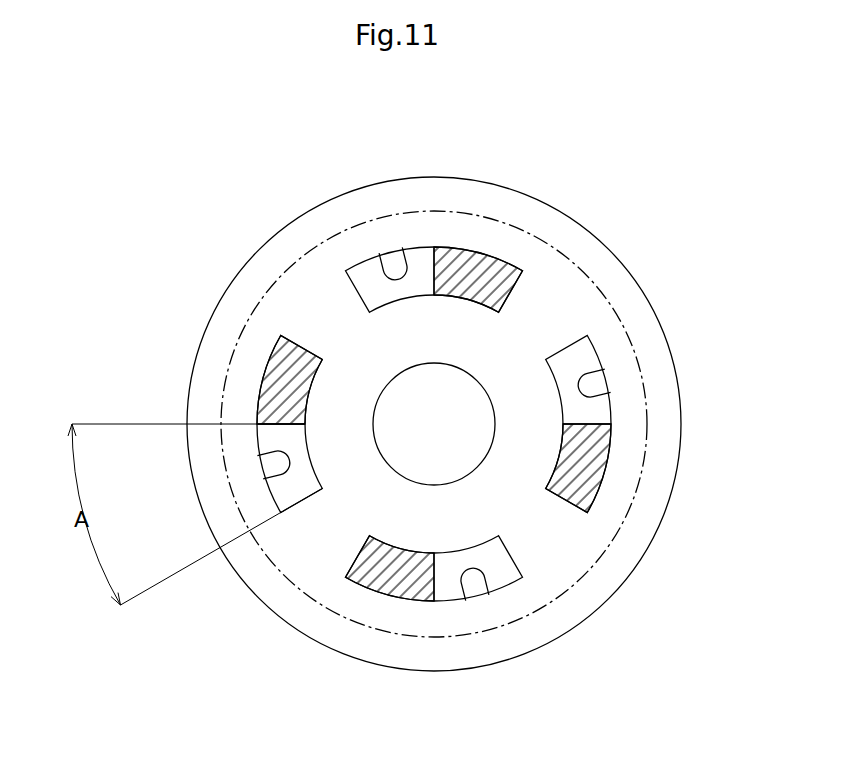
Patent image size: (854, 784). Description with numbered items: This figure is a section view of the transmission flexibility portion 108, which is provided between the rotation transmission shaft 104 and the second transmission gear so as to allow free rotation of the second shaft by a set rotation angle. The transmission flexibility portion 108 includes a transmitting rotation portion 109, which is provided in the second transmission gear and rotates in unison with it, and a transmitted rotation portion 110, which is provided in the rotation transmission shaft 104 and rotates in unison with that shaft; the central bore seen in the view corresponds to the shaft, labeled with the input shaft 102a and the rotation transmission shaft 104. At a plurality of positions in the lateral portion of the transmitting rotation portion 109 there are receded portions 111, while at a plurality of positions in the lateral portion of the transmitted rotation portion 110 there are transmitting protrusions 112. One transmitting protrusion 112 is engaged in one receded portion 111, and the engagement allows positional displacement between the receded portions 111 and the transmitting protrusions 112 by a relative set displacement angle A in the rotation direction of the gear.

The transmission flexibility portion 108 is at (160, 175).
The transmitting rotation portion 109 is at (563, 212).
The transmitted rotation portion 110 is at (647, 385).
The receded portion 111 is at (377, 263).
The transmitting protrusion 112 is at (470, 267).
The input shaft 102a is at (520, 528).
The rotation transmission shaft 104 is at (460, 453).